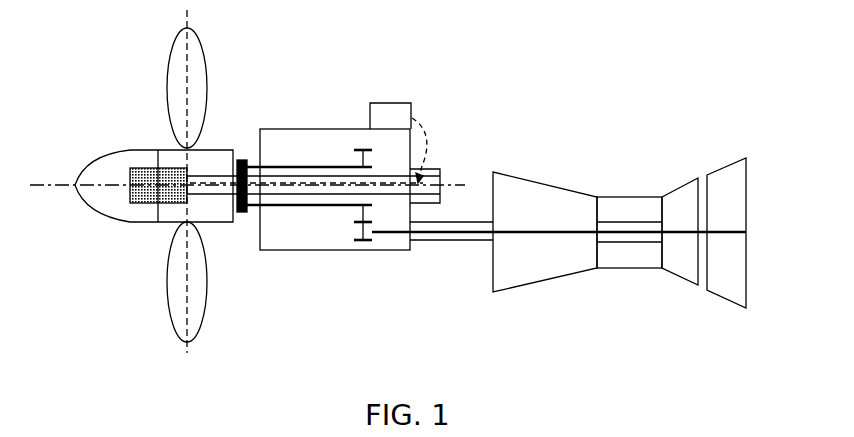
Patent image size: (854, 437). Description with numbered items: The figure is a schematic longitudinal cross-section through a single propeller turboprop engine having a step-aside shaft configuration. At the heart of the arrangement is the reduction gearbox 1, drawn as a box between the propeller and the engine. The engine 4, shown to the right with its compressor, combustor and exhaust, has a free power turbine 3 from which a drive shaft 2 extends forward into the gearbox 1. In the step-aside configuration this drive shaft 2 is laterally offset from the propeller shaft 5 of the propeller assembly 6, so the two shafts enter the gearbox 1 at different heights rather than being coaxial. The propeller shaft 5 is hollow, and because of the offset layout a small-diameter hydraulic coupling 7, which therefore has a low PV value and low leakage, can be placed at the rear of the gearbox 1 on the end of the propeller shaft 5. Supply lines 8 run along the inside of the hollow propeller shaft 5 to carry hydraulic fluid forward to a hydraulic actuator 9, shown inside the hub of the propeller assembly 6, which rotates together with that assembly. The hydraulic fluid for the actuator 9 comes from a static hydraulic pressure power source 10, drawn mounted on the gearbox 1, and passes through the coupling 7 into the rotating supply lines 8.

The gearbox 1 is at (329, 108).
The drive shaft 2 is at (452, 240).
The free power turbine 3 is at (727, 302).
The engine 4 is at (627, 178).
The propeller shaft 5 is at (297, 165).
The propeller assembly 6 is at (139, 134).
The hydraulic coupling 7 is at (443, 166).
The supply lines 8 is at (330, 188).
The hydraulic actuator 9 is at (148, 207).
The static hydraulic pressure power source 10 is at (390, 102).